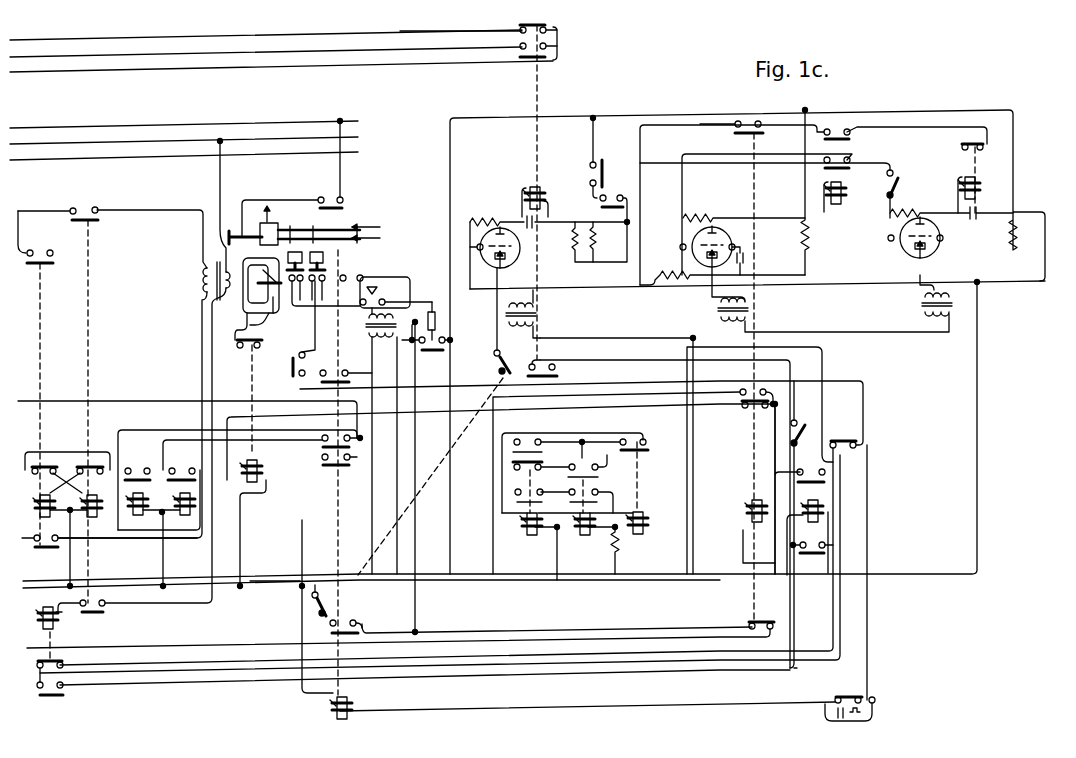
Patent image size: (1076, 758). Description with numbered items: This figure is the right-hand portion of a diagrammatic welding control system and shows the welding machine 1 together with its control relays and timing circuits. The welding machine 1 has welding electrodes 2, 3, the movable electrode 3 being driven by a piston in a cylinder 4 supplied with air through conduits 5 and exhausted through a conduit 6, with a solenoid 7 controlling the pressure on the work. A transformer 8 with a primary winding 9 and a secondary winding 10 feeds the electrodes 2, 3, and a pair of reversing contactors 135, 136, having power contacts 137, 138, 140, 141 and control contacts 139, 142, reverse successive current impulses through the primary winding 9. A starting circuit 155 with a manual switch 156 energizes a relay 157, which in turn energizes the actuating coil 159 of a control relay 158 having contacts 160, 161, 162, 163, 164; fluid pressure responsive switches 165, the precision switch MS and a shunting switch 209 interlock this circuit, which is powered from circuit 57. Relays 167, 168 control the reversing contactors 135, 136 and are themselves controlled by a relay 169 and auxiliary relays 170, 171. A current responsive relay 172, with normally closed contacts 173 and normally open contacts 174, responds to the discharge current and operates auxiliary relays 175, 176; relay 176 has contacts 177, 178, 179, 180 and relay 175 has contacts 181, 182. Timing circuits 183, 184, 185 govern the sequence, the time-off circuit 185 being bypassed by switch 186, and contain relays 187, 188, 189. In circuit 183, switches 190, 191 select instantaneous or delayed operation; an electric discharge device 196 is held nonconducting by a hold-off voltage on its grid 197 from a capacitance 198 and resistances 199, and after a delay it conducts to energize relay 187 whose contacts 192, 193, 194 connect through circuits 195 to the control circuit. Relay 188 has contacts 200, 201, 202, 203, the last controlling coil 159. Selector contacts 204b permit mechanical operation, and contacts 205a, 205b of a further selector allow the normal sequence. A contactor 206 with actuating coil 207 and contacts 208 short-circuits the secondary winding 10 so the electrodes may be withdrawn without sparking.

The welding machine 1 is at (225, 356).
The welding electrode 2 is at (268, 308).
The welding electrode 3 is at (262, 285).
The cylinder 4 is at (272, 223).
The conduits 5 is at (357, 226).
The conduit 6 is at (270, 204).
The solenoid 7 is at (247, 228).
The transformer 8 is at (224, 316).
The primary winding 9 is at (195, 262).
The secondary winding 10 is at (226, 268).
The circuit 57 is at (260, 582).
The reversing contactor 135 is at (40, 353).
The reversing contactor 136 is at (89, 353).
The power contacts 137 is at (32, 250).
The power contacts 138 is at (37, 535).
The control contacts 139 is at (48, 492).
The power contacts 140 is at (97, 208).
The power contacts 141 is at (105, 604).
The control contacts 142 is at (95, 492).
The starting circuit 155 is at (398, 273).
The manually operable switch 156 is at (380, 292).
The relay 157 is at (446, 331).
The control relay 158 is at (337, 527).
The actuating coil 159 is at (348, 706).
The contacts 160 is at (352, 621).
The contacts 161 is at (325, 460).
The contacts 162 is at (323, 441).
The contacts 163 is at (345, 371).
The contacts 164 is at (342, 197).
The fluid pressure responsive switches 165 is at (326, 258).
The relay 167 is at (143, 536).
The relay 168 is at (188, 536).
The relay 169 is at (638, 493).
The auxiliary relay 170 is at (536, 515).
The auxiliary relay 171 is at (586, 508).
The relay 172 is at (56, 631).
The normally closed contacts 173 is at (62, 666).
The normally open contacts 174 is at (40, 691).
The auxiliary relay 175 is at (820, 538).
The auxiliary relay 176 is at (755, 548).
The contacts 177 is at (761, 129).
The contacts 178 is at (740, 395).
The contacts 179 is at (745, 409).
The contacts 180 is at (768, 630).
The contacts 181 is at (802, 469).
The contacts 182 is at (826, 555).
The timing circuit 183 is at (508, 173).
The timing circuit 184 is at (722, 187).
The timing circuit 185 is at (937, 171).
The switch 186 is at (897, 186).
The relay 187 is at (542, 181).
The relay 188 is at (843, 172).
The relay 189 is at (977, 172).
The switch 190 is at (603, 163).
The switch 191 is at (606, 196).
The contacts 192 is at (520, 31).
The contacts 193 is at (520, 48).
The contacts 194 is at (556, 369).
The circuits 195 is at (420, 63).
The electric discharge device 196 is at (480, 235).
The grid 197 is at (533, 239).
The capacitance 198 is at (579, 242).
The resistances 199 is at (598, 243).
The contacts 200 is at (856, 130).
The contacts 201 is at (851, 153).
The contacts 202 is at (858, 447).
The contacts 203 is at (836, 698).
The contacts 204b is at (795, 419).
The contacts 205a is at (311, 598).
The contacts 205b is at (495, 356).
The contactor 206 is at (248, 389).
The actuating coil 207 is at (259, 481).
The contacts 208 is at (256, 348).
The switch 209 is at (290, 380).